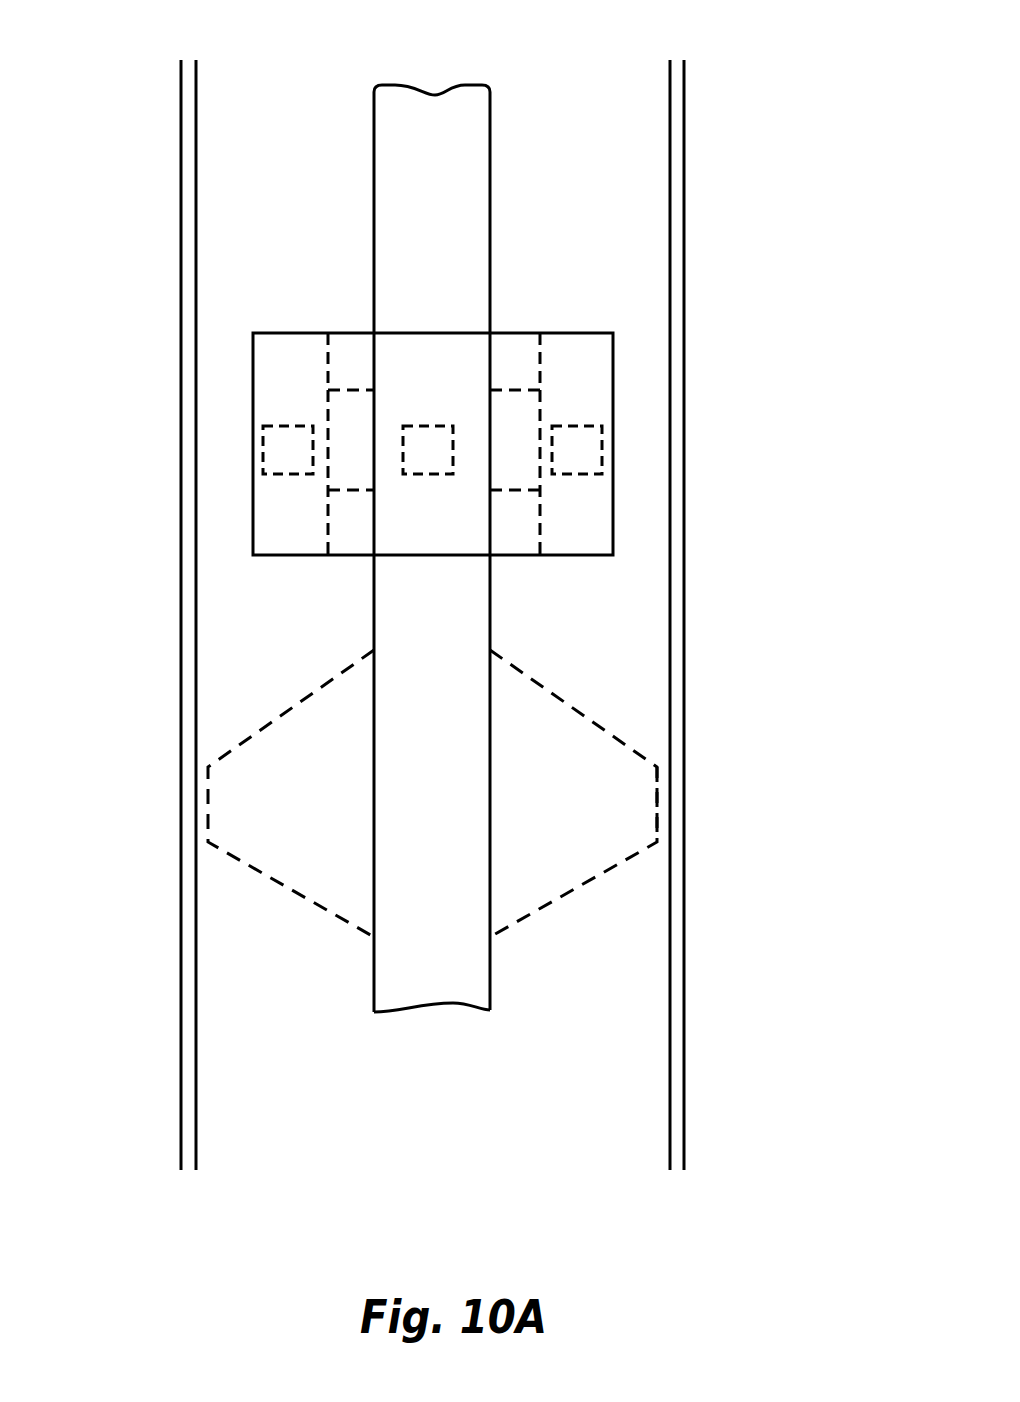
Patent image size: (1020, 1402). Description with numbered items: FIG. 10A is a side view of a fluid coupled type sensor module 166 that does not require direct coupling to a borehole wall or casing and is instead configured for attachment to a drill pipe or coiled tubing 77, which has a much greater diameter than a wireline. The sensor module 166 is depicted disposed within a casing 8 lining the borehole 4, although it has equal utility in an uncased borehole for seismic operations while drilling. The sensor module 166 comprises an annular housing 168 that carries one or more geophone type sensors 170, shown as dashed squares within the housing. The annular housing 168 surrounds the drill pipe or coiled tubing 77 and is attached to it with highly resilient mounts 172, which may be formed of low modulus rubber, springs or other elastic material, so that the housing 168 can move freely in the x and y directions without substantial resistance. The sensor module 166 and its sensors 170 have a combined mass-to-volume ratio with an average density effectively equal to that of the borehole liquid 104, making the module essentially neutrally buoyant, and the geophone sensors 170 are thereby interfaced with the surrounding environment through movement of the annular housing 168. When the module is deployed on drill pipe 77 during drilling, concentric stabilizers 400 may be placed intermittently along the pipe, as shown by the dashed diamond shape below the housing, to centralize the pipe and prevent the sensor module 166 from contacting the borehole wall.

The wellbore 4 is at (598, 1034).
The casing 8 is at (684, 648).
The drill pipe or coiled tubing 77 is at (492, 155).
The borehole liquid 104 is at (633, 884).
The sensor module 166 is at (258, 313).
The annular housing 168 is at (590, 333).
The geophone type sensors 170 is at (263, 453).
The resilient mounts 172 is at (347, 492).
The concentric stabilizers 400 is at (608, 792).